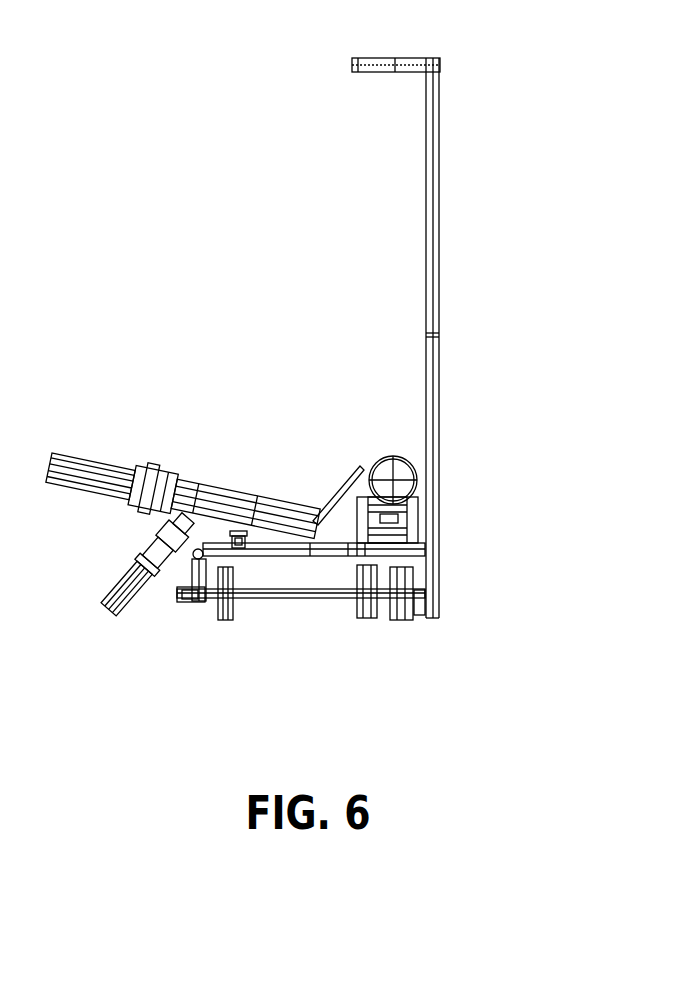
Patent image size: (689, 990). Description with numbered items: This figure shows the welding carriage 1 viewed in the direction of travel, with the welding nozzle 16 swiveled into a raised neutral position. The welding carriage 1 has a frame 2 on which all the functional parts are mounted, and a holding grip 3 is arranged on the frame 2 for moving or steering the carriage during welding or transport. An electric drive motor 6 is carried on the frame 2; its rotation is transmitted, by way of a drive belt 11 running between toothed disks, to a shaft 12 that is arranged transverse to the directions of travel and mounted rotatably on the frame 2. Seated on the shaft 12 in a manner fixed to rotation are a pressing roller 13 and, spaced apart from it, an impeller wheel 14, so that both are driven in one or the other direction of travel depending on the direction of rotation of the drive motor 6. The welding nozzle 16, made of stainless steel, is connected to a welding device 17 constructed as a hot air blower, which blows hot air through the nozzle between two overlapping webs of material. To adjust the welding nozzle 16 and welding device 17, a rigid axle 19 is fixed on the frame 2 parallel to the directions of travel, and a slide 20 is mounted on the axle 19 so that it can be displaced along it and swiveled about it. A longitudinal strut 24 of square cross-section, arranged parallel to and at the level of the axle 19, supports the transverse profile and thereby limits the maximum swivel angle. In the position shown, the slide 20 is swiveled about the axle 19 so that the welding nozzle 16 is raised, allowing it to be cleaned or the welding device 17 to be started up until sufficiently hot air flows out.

The welding carriage 1 is at (476, 254).
The frame 2 is at (333, 557).
The holding grip 3 is at (359, 58).
The electric drive motor 6 is at (404, 481).
The drive belt 11 is at (376, 524).
The shaft 12 is at (320, 600).
The pressing roller 13 is at (400, 605).
The impeller wheel 14 is at (225, 620).
The welding nozzle 16 is at (343, 487).
The welding device 17 is at (190, 482).
The axle 19 is at (210, 603).
The slide 20 is at (192, 562).
The longitudinal strut 24 is at (241, 548).